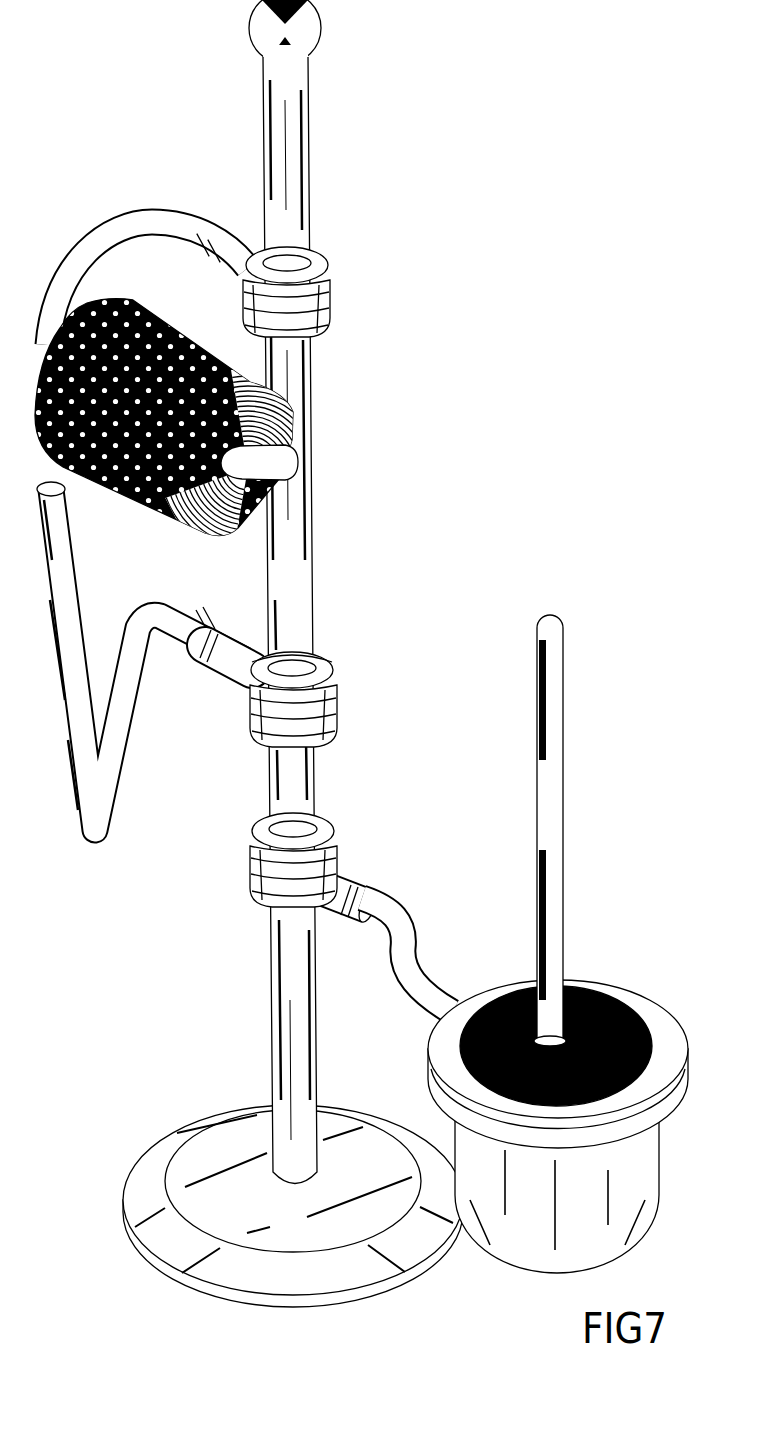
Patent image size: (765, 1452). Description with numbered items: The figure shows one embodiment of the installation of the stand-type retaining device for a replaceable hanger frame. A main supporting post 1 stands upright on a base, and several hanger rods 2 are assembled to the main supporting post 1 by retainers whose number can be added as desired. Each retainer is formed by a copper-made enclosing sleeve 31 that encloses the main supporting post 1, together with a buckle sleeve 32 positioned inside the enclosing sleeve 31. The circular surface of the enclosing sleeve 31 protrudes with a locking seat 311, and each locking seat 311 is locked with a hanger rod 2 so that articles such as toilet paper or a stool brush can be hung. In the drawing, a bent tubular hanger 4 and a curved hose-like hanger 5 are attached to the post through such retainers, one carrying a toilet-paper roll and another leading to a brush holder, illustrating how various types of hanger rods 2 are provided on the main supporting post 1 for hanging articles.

The main supporting post 1 is at (305, 133).
The hanger rod 2 is at (407, 957).
The enclosing sleeve 31 is at (333, 697).
The locking seat 311 is at (232, 677).
The buckle sleeve 32 is at (372, 625).
The bent lever arm 4 is at (122, 808).
The hose to roll holder 5 is at (108, 252).